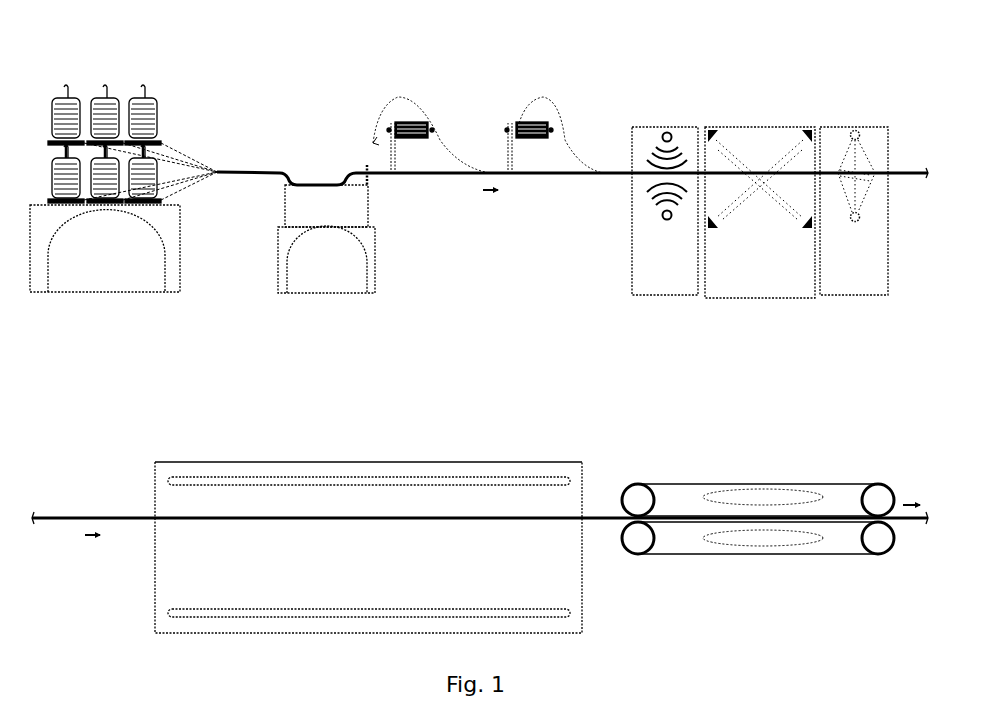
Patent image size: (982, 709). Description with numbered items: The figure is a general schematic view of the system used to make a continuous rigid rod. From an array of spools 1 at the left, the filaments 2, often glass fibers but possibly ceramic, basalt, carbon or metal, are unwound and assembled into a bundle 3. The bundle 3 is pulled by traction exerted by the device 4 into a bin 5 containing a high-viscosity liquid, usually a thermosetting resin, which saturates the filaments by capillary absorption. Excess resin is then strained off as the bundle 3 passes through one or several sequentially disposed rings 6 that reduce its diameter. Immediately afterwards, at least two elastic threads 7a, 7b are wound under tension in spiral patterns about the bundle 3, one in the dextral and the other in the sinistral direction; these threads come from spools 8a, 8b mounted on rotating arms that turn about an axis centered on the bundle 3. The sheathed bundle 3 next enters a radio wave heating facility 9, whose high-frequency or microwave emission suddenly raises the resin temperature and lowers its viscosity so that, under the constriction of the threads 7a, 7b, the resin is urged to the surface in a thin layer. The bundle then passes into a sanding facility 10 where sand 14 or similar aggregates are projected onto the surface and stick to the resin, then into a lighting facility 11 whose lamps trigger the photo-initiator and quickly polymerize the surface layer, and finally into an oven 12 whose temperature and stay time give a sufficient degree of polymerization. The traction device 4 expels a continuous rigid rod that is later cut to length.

The array of spools 1 is at (108, 78).
The filaments 2 is at (191, 153).
The bundle 3 is at (263, 180).
The traction device 4 is at (753, 465).
The bin 5 is at (327, 200).
The rings 6 is at (363, 163).
The elastic thread 7a is at (460, 152).
The elastic thread 7b is at (579, 156).
The spool 8a is at (402, 156).
The spool 8b is at (525, 156).
The radio wave heating facility 9 is at (681, 118).
The sanding facility 10 is at (770, 118).
The lighting facility 11 is at (861, 118).
The oven 12 is at (362, 455).
The sand 14 is at (870, 198).